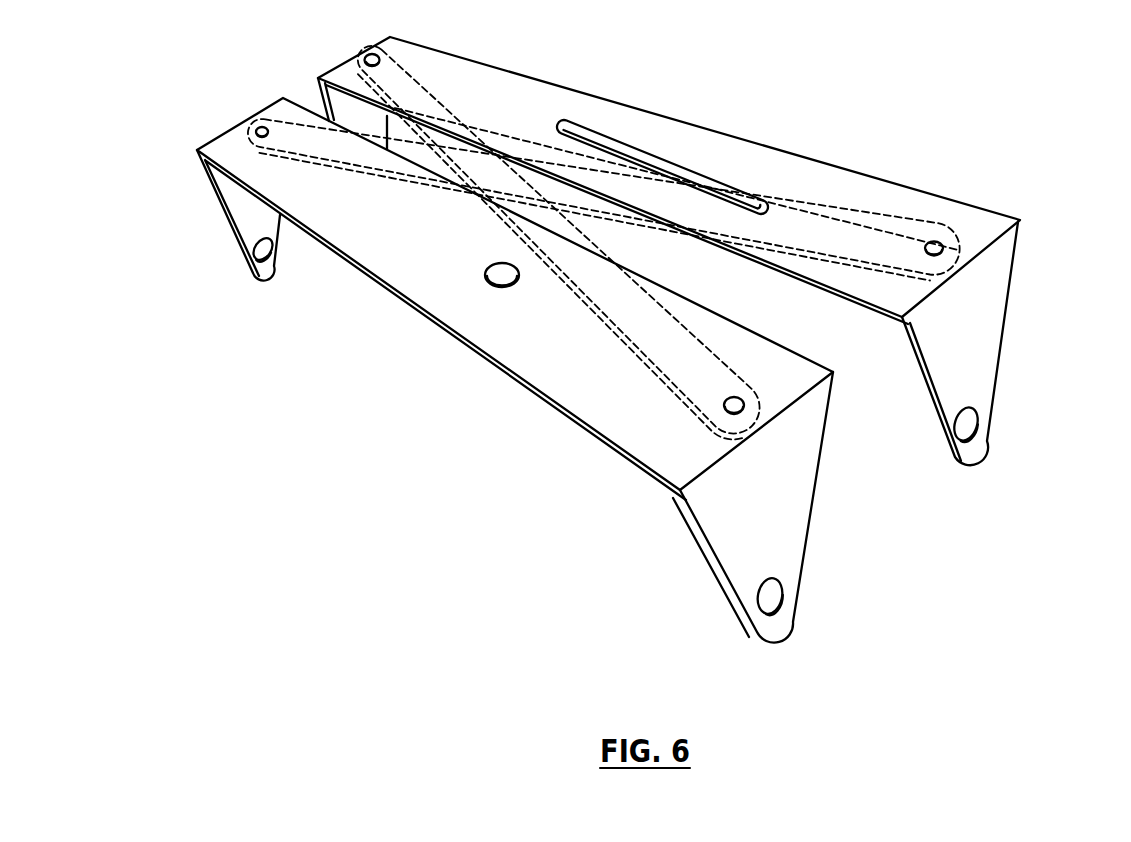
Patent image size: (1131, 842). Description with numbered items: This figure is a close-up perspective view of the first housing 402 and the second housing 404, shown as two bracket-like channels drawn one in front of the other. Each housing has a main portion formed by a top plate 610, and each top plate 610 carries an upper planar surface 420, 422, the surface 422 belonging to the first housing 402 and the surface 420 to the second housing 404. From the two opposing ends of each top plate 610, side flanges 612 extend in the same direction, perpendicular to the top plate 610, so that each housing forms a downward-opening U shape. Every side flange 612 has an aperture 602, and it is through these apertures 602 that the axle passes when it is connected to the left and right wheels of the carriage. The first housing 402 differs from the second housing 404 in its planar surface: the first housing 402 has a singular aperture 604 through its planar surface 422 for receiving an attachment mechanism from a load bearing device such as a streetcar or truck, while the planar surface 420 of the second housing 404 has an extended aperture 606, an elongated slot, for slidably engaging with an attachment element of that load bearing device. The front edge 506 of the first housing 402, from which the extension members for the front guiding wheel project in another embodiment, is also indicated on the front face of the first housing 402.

The first housing 402 is at (515, 314).
The second housing 404 is at (687, 180).
The upper planar surface 420 is at (669, 180).
The upper planar surface 422 is at (515, 299).
The front edge 506 is at (365, 279).
The aperture 602 is at (270, 263).
The singular aperture 604 is at (491, 280).
The extended aperture 606 is at (708, 186).
The top plate 610 is at (650, 118).
The side flanges 612 is at (205, 184).